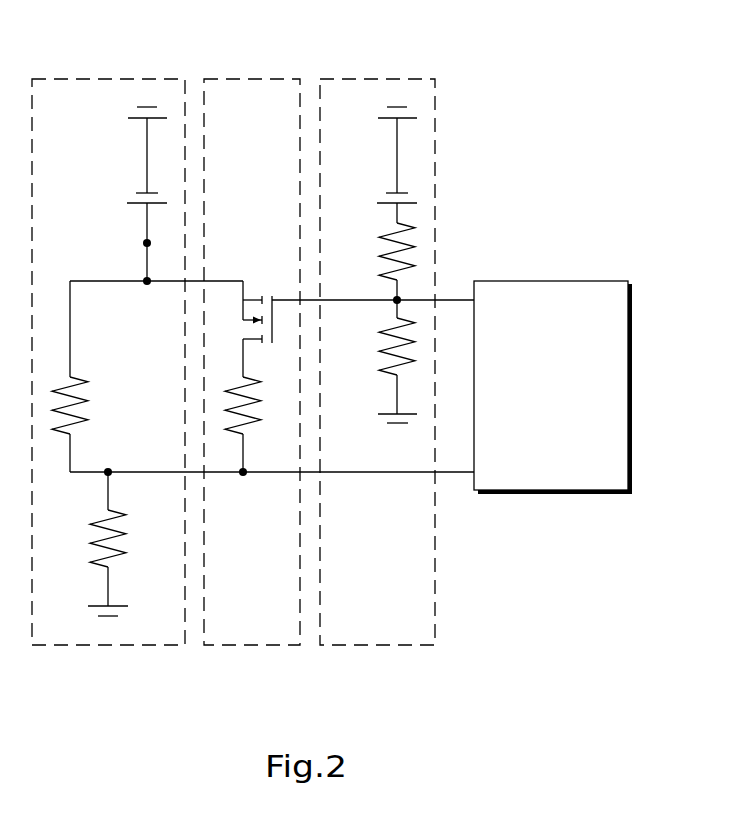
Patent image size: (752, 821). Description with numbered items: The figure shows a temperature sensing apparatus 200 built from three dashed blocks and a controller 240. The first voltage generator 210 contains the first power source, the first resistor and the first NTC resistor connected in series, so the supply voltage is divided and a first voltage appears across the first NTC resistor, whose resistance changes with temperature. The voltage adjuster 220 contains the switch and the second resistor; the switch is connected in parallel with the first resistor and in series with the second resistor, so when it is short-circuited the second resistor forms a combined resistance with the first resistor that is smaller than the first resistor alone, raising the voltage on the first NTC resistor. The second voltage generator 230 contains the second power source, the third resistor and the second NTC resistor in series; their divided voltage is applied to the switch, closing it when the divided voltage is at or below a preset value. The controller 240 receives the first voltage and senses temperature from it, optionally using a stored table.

The temperature sensing apparatus 200 is at (597, 39).
The first voltage generator 210 is at (106, 78).
The voltage adjuster 220 is at (249, 78).
The second voltage generator 230 is at (374, 78).
The controller 240 is at (532, 413).